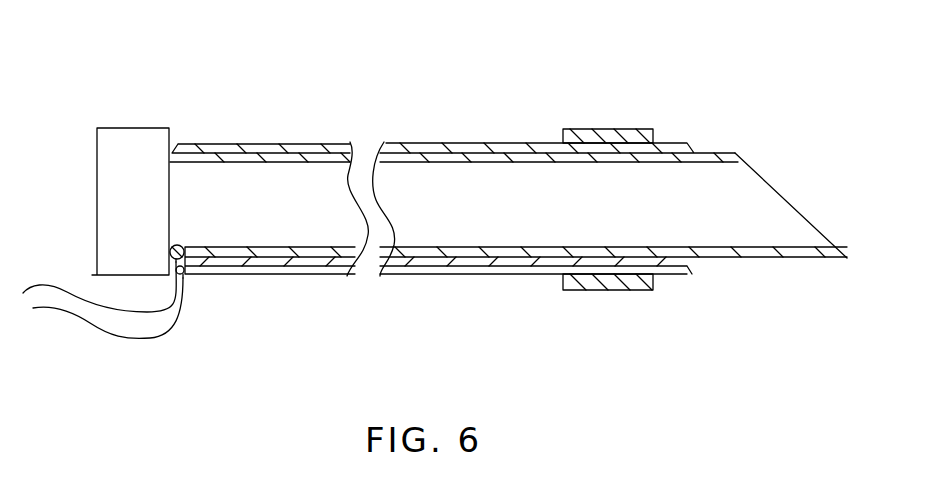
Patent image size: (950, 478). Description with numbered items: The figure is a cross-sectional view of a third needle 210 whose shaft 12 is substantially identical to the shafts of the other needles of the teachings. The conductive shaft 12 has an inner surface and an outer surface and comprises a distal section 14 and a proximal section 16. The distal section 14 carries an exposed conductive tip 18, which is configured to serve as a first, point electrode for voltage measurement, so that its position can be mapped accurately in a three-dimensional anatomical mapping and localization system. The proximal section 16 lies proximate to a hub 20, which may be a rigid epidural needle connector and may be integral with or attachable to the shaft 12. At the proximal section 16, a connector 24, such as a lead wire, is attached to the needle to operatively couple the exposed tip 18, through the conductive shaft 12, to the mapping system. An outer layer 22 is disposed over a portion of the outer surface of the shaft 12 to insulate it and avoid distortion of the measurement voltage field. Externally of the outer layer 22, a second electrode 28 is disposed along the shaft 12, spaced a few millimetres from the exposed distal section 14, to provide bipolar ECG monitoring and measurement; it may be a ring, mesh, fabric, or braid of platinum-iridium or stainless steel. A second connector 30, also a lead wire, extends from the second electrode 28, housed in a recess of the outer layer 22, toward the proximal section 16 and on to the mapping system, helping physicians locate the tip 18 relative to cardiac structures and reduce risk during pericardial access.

The third needle 210 is at (441, 86).
The shaft 12 is at (705, 152).
The distal section 14 is at (729, 153).
The proximal section 16 is at (177, 148).
The conductive tip 18 is at (790, 192).
The hub 20 is at (97, 200).
The outer layer 22 is at (662, 145).
The connector 24 is at (87, 303).
The second electrode 28 is at (607, 292).
The second connector 30 is at (158, 338).